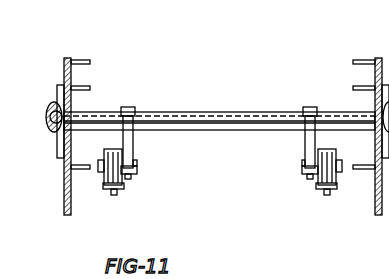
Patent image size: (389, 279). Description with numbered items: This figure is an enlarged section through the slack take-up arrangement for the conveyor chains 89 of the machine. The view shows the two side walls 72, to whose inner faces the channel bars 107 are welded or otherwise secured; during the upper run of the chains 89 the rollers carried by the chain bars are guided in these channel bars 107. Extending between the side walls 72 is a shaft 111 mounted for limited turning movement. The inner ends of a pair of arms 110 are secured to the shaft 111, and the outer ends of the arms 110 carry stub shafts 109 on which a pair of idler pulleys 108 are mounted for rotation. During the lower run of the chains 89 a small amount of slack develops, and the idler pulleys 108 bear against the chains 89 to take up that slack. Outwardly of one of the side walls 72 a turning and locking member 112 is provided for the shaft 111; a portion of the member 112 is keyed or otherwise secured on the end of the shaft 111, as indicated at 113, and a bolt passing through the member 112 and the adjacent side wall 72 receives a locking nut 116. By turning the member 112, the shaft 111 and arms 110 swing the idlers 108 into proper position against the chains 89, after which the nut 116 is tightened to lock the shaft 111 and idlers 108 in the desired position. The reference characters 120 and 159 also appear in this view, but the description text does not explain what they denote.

The side walls 72 is at (64, 70).
The channel bars 107 is at (78, 60).
The shaft 111 is at (212, 112).
The arms 110 is at (133, 145).
The idler pulleys 108 is at (122, 185).
The stub shafts 109 is at (135, 172).
The chains 89 is at (113, 196).
The turning and locking member 112 is at (50, 106).
The keyed portion 113 is at (58, 113).
The locking nut 116 is at (57, 150).
The post 120 is at (371, 157).
The member 159 is at (388, 270).